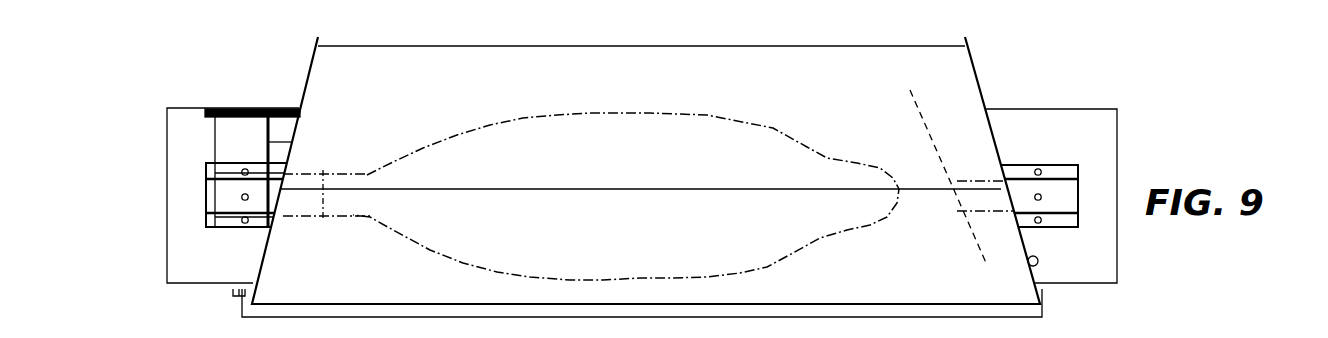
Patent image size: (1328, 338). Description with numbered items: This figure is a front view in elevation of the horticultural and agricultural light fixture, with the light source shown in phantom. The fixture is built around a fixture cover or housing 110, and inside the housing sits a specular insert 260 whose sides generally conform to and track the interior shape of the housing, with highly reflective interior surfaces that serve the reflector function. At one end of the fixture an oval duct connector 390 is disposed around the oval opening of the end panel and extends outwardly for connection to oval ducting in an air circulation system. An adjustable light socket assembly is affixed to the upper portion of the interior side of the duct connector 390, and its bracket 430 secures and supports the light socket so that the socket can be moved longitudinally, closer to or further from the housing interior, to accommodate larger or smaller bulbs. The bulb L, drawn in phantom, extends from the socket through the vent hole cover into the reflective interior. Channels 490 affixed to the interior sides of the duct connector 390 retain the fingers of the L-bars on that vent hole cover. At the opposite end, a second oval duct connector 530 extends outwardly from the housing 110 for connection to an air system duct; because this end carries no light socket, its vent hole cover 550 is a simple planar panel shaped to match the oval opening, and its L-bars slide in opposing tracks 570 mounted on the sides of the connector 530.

The fixture cover or housing 110 is at (947, 46).
The specular insert 260 is at (867, 53).
The oval duct connector 390 is at (225, 265).
The bracket 430 is at (232, 133).
The channels 490 is at (225, 202).
The oval duct connector 530 is at (1048, 108).
The vent hole cover 550 is at (978, 250).
The tracks 570 is at (1067, 195).
The bulb L is at (650, 108).